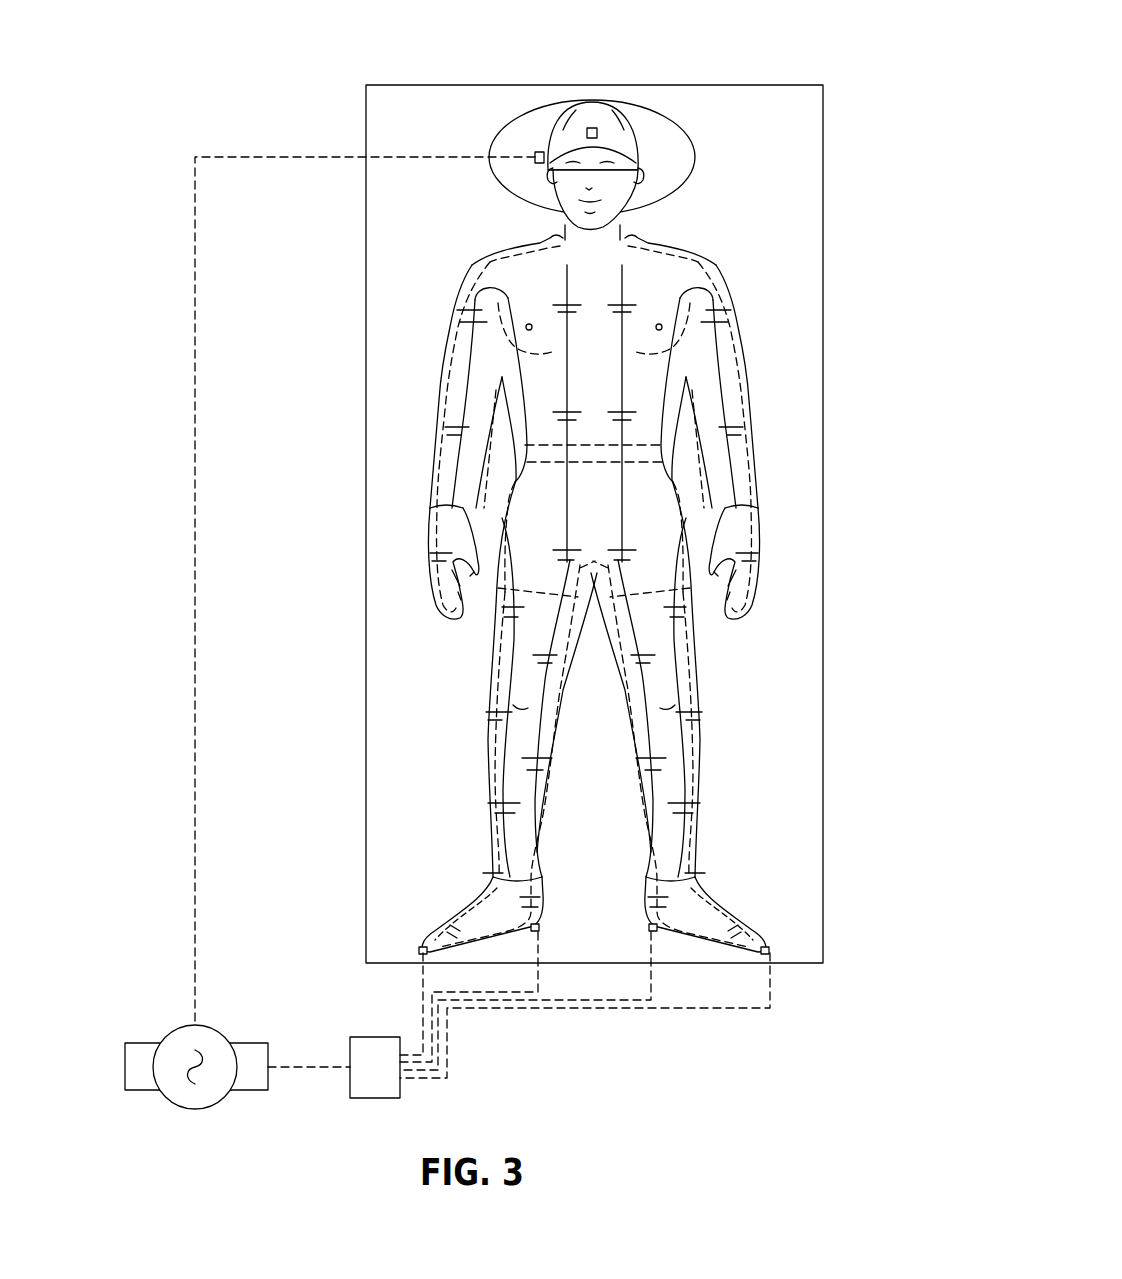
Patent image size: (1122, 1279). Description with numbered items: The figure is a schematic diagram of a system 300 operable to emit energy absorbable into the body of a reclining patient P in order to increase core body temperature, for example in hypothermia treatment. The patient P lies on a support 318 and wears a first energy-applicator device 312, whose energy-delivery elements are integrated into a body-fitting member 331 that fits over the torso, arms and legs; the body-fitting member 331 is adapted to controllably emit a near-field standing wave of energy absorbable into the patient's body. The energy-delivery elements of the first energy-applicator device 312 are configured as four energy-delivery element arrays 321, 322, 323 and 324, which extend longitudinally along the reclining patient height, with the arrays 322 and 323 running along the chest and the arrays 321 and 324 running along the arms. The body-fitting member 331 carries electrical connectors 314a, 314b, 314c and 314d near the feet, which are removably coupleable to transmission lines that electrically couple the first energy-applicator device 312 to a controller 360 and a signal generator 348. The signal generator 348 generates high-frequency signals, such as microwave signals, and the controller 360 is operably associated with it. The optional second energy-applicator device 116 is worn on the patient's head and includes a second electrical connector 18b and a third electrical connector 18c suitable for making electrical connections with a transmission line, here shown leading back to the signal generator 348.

The system 300 is at (795, 32).
The second energy-applicator device 116 is at (589, 95).
The patient support surface 318 is at (366, 128).
The second electrical connector 18b is at (598, 128).
The third electrical connector 18c is at (536, 152).
The patient P is at (657, 165).
The first energy-applicator device 312 is at (424, 430).
The first energy-delivery element array 321 is at (465, 345).
The second energy-delivery element array 322 is at (547, 300).
The third energy-delivery element array 323 is at (641, 300).
The fourth energy-delivery element array 324 is at (725, 345).
The body-fitting member 331 is at (496, 670).
The electrical connector 314a is at (426, 954).
The electrical connector 314b is at (541, 933).
The electrical connector 314c is at (656, 933).
The electrical connector 314d is at (773, 954).
The controller 360 is at (375, 1037).
The signal generator 348 is at (125, 1067).